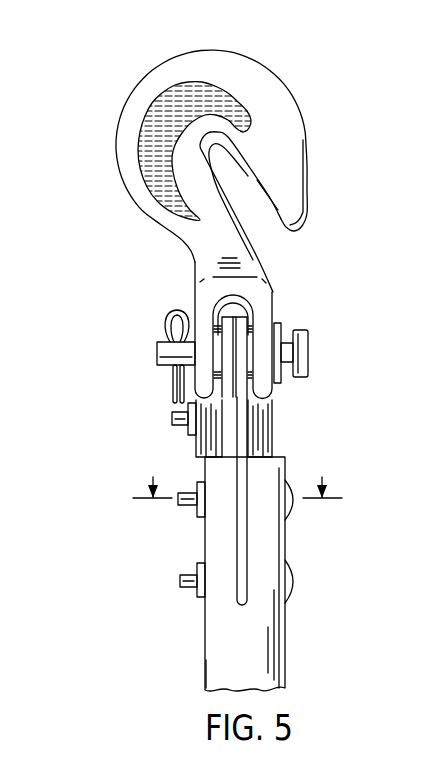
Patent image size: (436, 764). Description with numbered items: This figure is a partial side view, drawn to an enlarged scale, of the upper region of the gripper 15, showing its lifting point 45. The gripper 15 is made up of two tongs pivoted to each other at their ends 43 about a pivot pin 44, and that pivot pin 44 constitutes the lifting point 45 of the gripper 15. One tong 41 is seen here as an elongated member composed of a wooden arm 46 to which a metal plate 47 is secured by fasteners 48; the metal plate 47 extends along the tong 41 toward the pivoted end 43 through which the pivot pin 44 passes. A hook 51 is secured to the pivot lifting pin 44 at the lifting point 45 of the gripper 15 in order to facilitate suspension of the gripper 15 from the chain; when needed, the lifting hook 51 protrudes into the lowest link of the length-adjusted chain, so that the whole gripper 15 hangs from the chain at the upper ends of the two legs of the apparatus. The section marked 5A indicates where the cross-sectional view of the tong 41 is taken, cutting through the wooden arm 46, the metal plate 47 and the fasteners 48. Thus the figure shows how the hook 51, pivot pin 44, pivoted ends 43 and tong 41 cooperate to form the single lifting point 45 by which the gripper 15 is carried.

The gripper 15 is at (96, 90).
The hook 51 is at (277, 82).
The pivot pin 44 is at (287, 340).
The lifting point 45 is at (308, 354).
The metal plate 47 is at (249, 430).
The ends 43 is at (283, 468).
The fasteners 48 is at (293, 500).
The tong 41 is at (192, 618).
The wooden arm 46 is at (207, 660).
The section line 5A- 5A is at (235, 494).